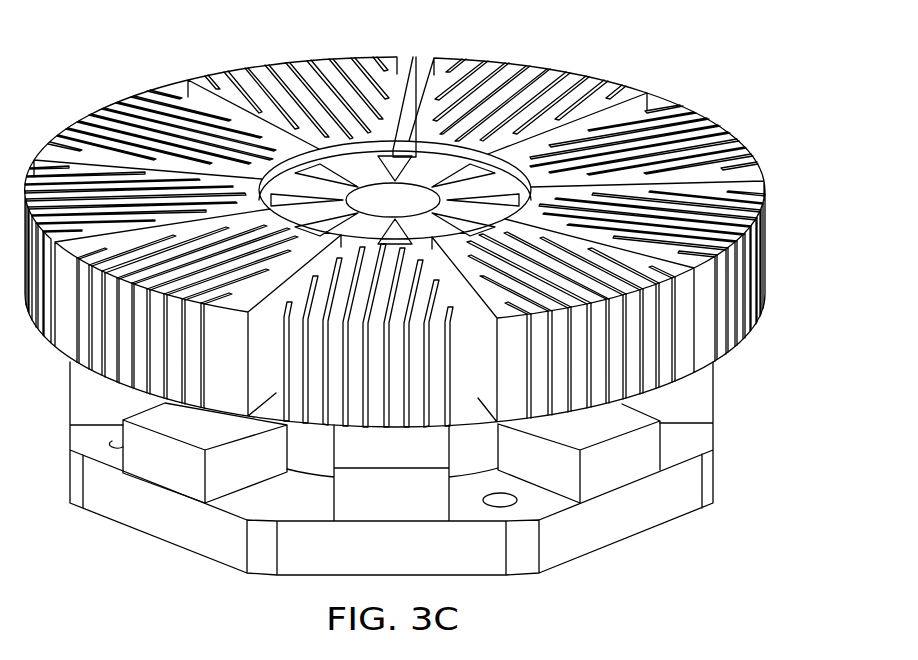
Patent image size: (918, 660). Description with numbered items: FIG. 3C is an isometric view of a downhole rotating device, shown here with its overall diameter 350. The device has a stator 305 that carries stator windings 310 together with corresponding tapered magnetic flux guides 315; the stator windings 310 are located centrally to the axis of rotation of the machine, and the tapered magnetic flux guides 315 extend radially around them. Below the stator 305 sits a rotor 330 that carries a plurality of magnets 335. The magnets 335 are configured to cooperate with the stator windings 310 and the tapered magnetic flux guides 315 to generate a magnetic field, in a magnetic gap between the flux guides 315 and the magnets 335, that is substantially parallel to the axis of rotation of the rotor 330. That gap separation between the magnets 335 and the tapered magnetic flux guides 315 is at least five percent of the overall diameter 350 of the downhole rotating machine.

The stator 305 is at (774, 245).
The stator windings 310 is at (268, 193).
The tapered magnetic flux guides 315 is at (622, 90).
The rotor 330 is at (165, 542).
The magnets 335 is at (619, 475).
The overall diameter 350 is at (158, 63).